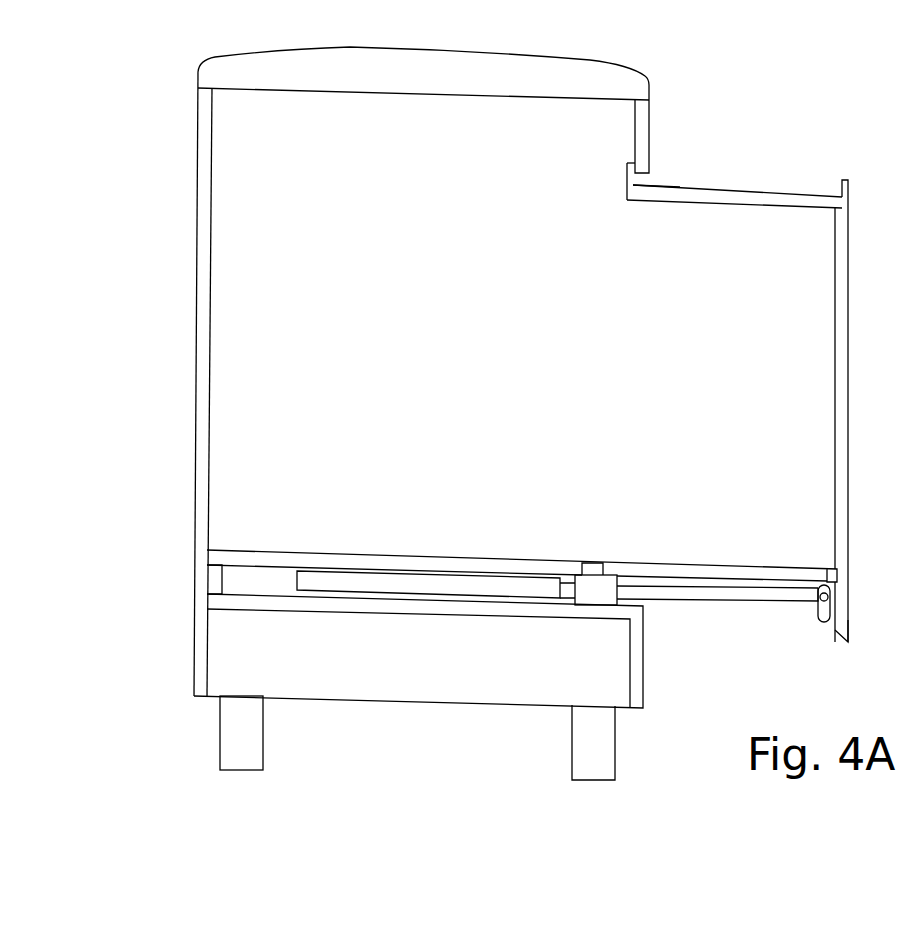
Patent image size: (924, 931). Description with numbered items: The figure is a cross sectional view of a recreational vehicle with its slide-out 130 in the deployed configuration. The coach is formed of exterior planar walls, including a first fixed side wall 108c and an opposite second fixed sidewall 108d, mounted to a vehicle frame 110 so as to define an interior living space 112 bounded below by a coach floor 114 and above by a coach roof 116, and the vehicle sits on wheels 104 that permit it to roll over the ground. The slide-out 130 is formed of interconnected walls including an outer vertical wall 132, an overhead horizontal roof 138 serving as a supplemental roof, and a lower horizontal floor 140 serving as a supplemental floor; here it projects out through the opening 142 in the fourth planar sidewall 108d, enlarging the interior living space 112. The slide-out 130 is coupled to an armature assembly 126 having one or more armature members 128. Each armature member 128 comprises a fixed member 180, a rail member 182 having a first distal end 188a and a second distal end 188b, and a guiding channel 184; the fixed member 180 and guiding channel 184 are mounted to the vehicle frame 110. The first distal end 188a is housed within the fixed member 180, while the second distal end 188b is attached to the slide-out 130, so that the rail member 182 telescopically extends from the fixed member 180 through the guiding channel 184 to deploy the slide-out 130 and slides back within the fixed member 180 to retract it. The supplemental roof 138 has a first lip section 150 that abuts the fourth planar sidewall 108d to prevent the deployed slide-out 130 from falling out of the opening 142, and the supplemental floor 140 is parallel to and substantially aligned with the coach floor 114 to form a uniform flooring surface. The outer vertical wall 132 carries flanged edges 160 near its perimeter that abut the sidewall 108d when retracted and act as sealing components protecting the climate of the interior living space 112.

The wheels 104 is at (244, 760).
The first fixed side wall 108c is at (205, 424).
The second fixed sidewall 108d is at (650, 135).
The vehicle frame 110 is at (214, 580).
The interior living space 112 is at (297, 295).
The coach floor 114 is at (294, 560).
The coach roof 116 is at (348, 61).
The armature assembly 126 is at (437, 530).
The armature member 128 is at (400, 583).
The slide-out 130 is at (772, 176).
The outer vertical wall 132 is at (846, 360).
The overhead horizontal roof 138 is at (727, 200).
The lower horizontal floor 140 is at (723, 567).
The opening 142 is at (655, 177).
The first lip section 150 is at (627, 189).
The flanged edges 160 is at (845, 200).
The fixed member 180 is at (481, 585).
The rail member 182 is at (725, 595).
The guiding channel 184 is at (593, 593).
The first distal end 188a is at (568, 590).
The second distal end 188b is at (815, 597).